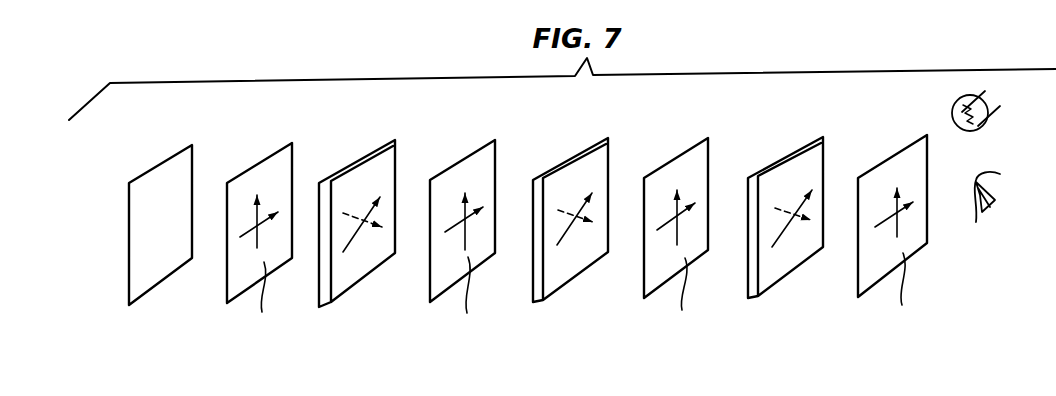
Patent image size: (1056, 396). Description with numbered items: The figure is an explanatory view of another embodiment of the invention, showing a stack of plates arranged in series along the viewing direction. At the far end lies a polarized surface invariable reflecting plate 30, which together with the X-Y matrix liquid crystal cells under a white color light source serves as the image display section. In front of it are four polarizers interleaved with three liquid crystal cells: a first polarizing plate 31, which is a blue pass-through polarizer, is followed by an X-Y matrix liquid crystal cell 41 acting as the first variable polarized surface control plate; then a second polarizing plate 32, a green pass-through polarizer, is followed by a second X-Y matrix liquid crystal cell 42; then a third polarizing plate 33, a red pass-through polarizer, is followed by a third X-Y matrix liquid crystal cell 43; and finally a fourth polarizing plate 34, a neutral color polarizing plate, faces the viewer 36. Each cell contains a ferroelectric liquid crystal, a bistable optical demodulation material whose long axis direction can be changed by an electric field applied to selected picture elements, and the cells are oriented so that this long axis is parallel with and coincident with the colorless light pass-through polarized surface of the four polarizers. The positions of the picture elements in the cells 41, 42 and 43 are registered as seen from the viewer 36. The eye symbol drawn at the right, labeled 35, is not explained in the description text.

The polarized surface invariable reflecting plate 30 is at (187, 147).
The first polarizing plate 31 is at (289, 146).
The X-Y matrix liquid crystal cell 41 is at (372, 150).
The second polarizing plate 32 is at (478, 149).
The X-Y matrix liquid crystal cell 42 is at (580, 152).
The third polarizing plate 33 is at (690, 148).
The X-Y matrix liquid crystal cell 43 is at (790, 153).
The fourth polarizing plate 34 is at (904, 148).
The observer's eye 35 is at (985, 130).
The viewer 36 is at (987, 213).